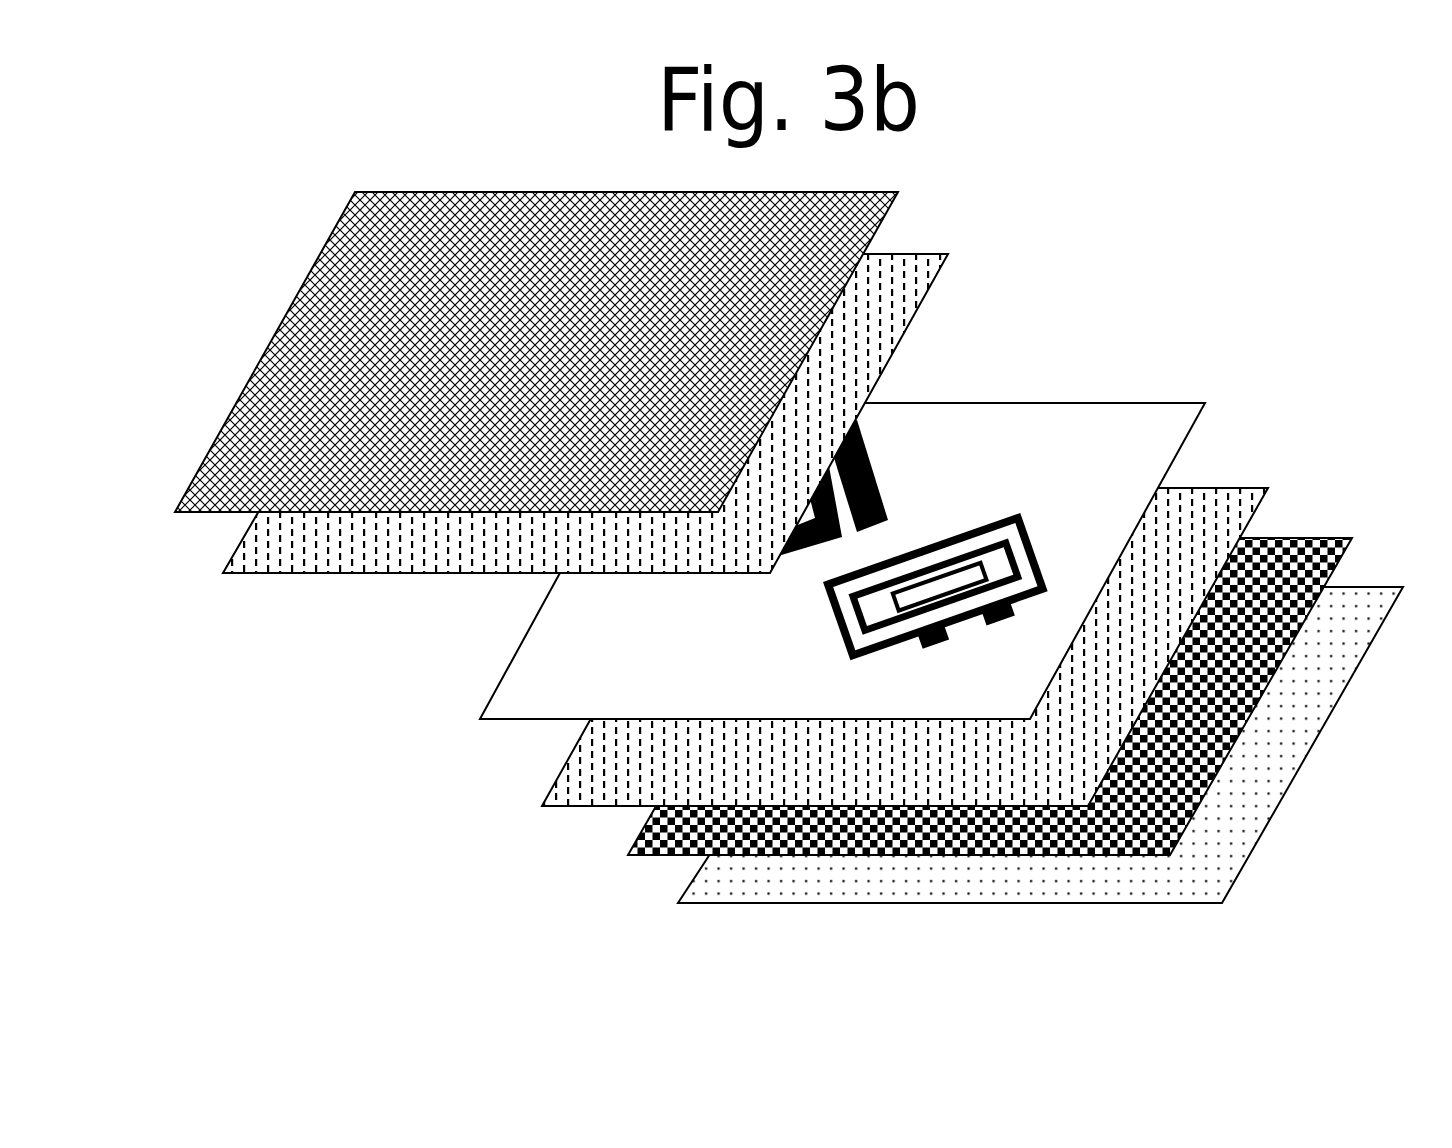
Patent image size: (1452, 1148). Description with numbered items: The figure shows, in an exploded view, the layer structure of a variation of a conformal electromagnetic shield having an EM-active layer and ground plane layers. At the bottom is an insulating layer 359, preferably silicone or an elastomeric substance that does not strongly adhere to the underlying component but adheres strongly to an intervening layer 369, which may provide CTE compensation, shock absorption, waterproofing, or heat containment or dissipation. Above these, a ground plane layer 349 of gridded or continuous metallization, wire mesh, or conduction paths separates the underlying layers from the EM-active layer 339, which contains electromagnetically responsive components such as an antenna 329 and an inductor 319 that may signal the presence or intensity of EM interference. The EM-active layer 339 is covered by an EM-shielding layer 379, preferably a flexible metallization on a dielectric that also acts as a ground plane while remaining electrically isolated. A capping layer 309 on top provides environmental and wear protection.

The capping layer 309 is at (355, 192).
The EM-shielding layer 379 is at (392, 572).
The inductor 319 is at (868, 470).
The antenna 329 is at (1012, 517).
The EM-active layer 339 is at (1070, 402).
The ground plane layer 349 is at (1218, 495).
The intervening layer 369 is at (628, 855).
The insulating layer 359 is at (705, 905).